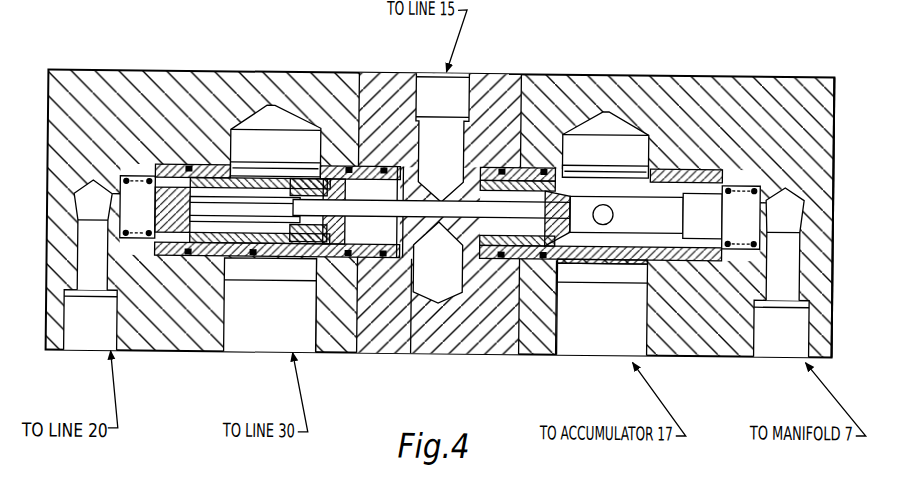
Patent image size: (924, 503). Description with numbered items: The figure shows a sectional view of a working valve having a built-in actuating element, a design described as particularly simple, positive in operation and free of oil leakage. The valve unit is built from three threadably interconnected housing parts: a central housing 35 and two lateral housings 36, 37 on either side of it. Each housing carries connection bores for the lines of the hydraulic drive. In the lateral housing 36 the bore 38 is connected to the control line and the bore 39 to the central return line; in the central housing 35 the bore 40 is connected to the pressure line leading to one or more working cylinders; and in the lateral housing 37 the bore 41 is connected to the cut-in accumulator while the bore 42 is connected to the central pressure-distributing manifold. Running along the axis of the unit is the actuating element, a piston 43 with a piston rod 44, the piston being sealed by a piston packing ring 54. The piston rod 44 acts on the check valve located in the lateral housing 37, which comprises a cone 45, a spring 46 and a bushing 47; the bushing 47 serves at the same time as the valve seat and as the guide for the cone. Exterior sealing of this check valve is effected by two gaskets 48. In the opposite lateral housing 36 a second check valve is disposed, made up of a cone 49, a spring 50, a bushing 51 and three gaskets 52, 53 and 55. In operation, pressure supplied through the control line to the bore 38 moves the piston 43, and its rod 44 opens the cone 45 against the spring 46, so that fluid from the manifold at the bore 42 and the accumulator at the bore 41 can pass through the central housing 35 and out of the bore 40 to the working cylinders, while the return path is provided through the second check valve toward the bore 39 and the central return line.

The central housing 35 is at (376, 93).
The lateral housing 36 is at (76, 105).
The lateral housing 37 is at (805, 103).
The bore 38 is at (79, 337).
The bore 39 is at (260, 335).
The bore 40 is at (426, 85).
The bore 41 is at (587, 325).
The bore 42 is at (775, 335).
The piston 43 is at (167, 259).
The piston rod 44 is at (408, 214).
The cone 45 is at (550, 146).
The spring 46 is at (755, 181).
The bushing 47 is at (506, 166).
The gaskets 48 is at (495, 262).
The cone 49 is at (326, 168).
The spring 50 is at (125, 177).
The bushing 51 is at (211, 165).
The gasket 52 is at (188, 169).
The gasket 53 is at (224, 259).
The piston packing ring 54 is at (193, 259).
The gasket 55 is at (332, 331).